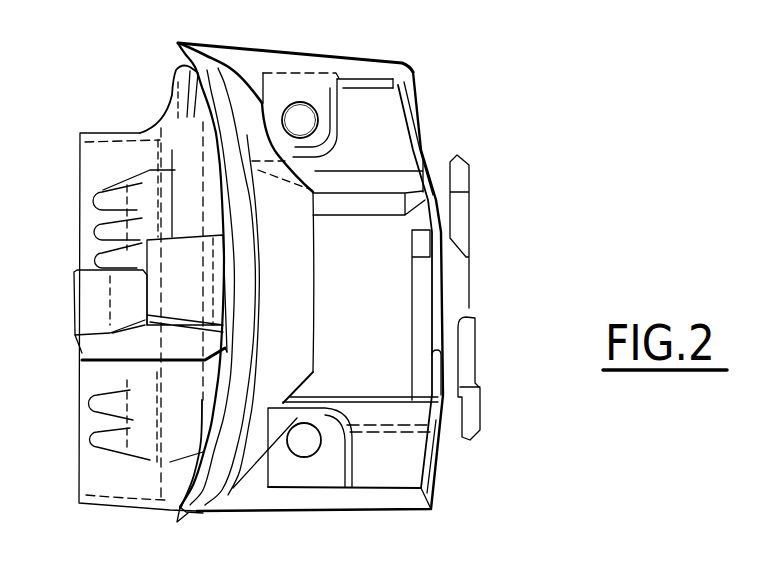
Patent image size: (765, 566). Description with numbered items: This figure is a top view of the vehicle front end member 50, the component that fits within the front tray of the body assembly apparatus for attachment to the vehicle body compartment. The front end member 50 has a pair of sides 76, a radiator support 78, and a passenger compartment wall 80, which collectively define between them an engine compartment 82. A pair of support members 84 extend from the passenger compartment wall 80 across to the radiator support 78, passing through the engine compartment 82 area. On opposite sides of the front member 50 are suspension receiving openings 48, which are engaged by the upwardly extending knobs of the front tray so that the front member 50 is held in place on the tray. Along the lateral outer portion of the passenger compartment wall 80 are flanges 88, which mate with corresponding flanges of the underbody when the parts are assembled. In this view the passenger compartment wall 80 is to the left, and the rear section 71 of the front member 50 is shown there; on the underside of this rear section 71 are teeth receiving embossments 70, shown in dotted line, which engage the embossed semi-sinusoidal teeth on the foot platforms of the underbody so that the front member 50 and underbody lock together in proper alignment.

The front member 50 is at (355, 29).
The sides 76 is at (233, 58).
The suspension receiving openings 48 is at (302, 113).
The support members 84 is at (390, 183).
The engine compartment 82 is at (395, 312).
The radiator support 78 is at (457, 280).
The flanges 88 is at (122, 134).
The passenger compartment wall 80 is at (198, 142).
The teeth receiving embossments 70 is at (86, 203).
The rear section 71 is at (66, 233).